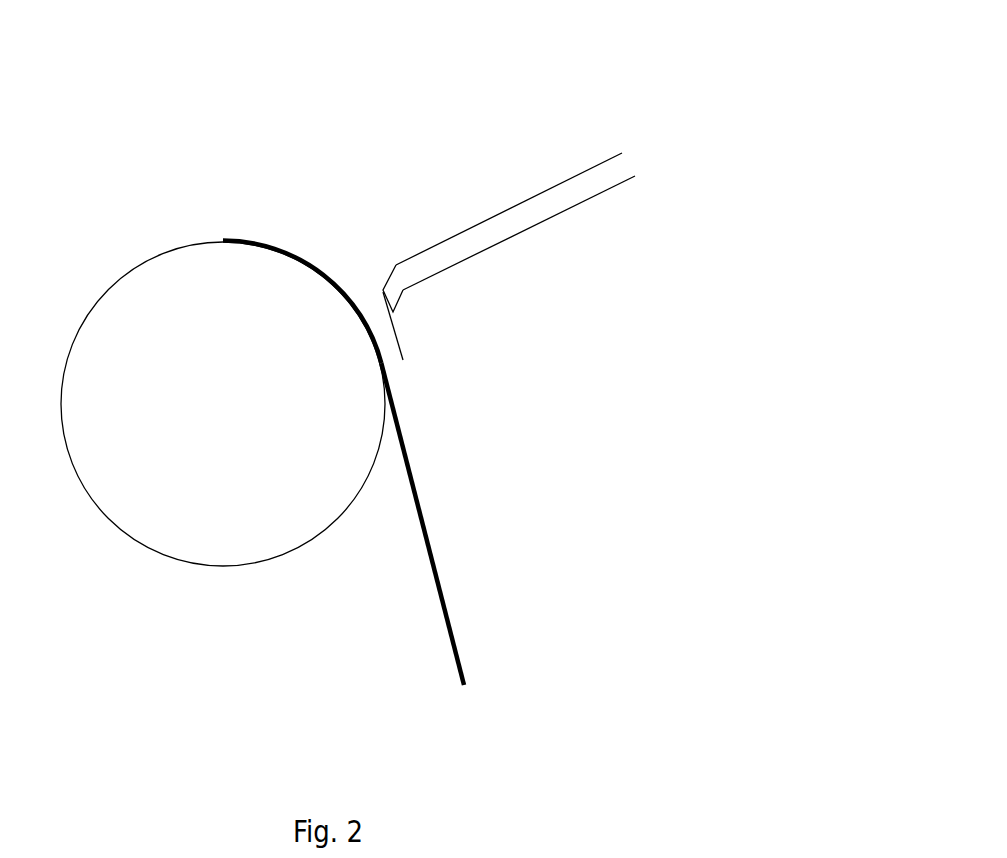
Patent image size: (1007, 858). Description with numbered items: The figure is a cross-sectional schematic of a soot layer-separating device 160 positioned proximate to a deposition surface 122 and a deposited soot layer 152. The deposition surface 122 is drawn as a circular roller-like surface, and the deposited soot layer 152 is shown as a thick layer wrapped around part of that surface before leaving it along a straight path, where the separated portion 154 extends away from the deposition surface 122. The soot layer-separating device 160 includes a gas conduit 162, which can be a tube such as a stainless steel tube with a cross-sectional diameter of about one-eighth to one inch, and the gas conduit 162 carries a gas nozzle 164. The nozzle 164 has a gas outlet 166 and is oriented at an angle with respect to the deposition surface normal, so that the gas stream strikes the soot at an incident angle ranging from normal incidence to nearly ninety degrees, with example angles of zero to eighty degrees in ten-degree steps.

The deposition surface 122 is at (353, 317).
The deposited soot layer 152 is at (303, 253).
The web leaving roller 154 is at (463, 657).
The soot layer-separating device 160 is at (509, 260).
The gas conduit 162 is at (569, 195).
The gas nozzle 164 is at (393, 290).
The gas outlet 166 is at (403, 360).